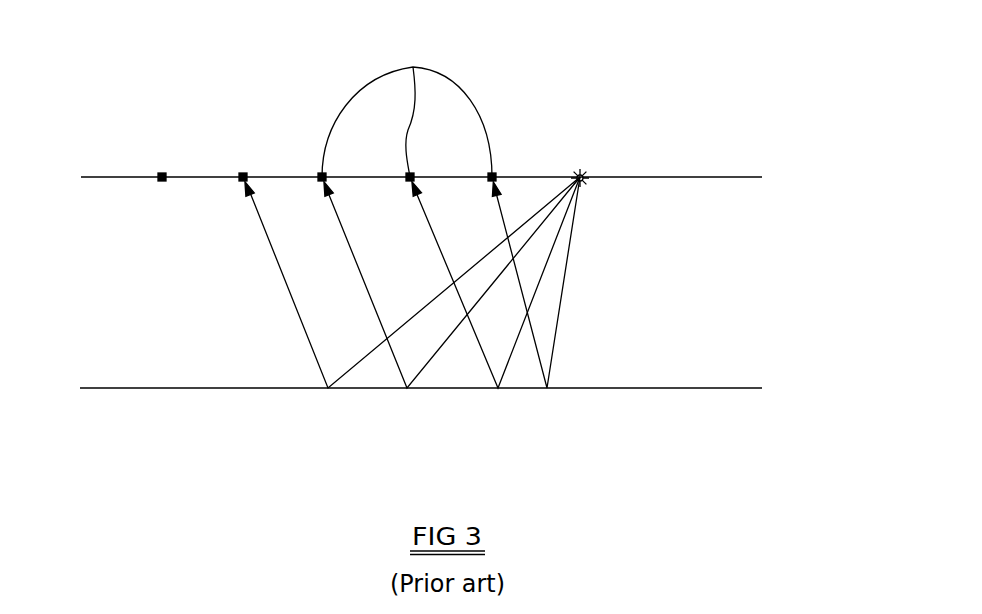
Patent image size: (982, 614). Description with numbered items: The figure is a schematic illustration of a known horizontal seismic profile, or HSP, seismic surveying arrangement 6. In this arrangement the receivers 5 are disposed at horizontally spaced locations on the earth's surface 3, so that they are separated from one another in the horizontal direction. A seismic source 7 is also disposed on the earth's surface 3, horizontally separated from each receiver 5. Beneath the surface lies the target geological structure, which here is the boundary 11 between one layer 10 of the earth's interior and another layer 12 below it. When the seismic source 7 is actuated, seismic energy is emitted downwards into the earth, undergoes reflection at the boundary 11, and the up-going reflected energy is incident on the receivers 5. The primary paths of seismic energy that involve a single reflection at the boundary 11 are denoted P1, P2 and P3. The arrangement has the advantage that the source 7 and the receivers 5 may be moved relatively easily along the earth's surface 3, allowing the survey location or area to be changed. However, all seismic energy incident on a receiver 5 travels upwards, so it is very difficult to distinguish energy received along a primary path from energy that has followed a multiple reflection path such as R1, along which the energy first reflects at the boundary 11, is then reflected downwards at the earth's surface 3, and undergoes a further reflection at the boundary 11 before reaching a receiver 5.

The earth's surface 3 is at (122, 177).
The seismic receivers 5 is at (367, 108).
The seismic source 7 is at (585, 174).
The HSP seismic surveying arrangement 6 is at (692, 52).
The layer 10 is at (805, 365).
The boundary 11 is at (192, 388).
The layer 12 is at (813, 443).
The primary path P1 is at (509, 233).
The primary path P2 is at (438, 240).
The primary path P3 is at (343, 234).
The multiple reflection path R1 is at (277, 265).